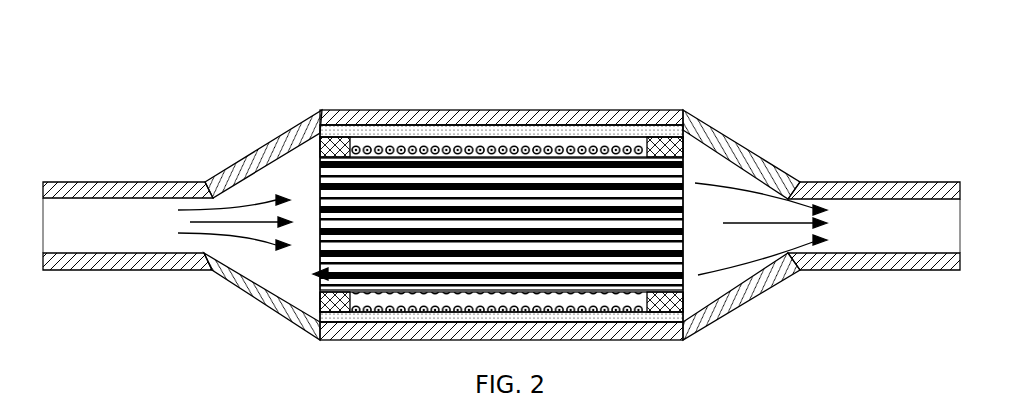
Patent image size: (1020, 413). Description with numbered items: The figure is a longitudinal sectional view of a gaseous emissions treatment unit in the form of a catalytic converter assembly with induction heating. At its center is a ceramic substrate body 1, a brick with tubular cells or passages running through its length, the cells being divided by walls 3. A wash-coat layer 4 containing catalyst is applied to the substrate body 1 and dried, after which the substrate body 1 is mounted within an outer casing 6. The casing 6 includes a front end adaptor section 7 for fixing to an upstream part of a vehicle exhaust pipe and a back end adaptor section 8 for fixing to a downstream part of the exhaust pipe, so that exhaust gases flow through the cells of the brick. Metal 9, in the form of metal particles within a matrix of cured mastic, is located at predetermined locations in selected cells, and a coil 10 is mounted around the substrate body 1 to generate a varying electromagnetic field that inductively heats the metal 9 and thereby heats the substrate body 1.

The ceramic substrate body 1 is at (303, 163).
The walls 3 is at (327, 322).
The wash-coat layer 4 is at (313, 274).
The outer casing 6 is at (455, 122).
The front end adaptor section 7 is at (213, 143).
The back end adaptor section 8 is at (740, 123).
The metal 9 is at (559, 185).
The coil 10 is at (392, 146).